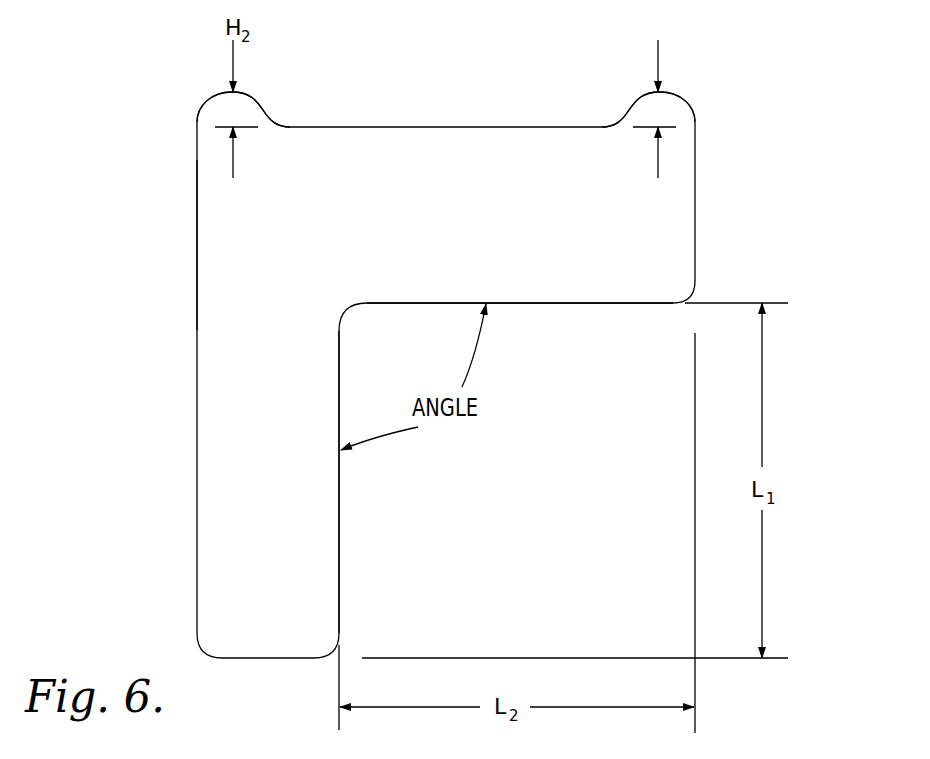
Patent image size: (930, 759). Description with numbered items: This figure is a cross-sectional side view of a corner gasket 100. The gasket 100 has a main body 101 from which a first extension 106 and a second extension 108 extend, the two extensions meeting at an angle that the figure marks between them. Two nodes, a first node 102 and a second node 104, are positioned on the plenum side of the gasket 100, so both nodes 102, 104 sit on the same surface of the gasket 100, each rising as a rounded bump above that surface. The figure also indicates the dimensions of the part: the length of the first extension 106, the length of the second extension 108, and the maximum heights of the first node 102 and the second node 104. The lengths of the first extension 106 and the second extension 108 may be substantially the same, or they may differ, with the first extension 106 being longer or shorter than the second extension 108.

The corner gasket 100 is at (714, 211).
The main body 101 is at (227, 241).
The first node 102 is at (683, 107).
The second node 104 is at (210, 103).
The first extension 106 is at (592, 303).
The second extension 108 is at (337, 567).